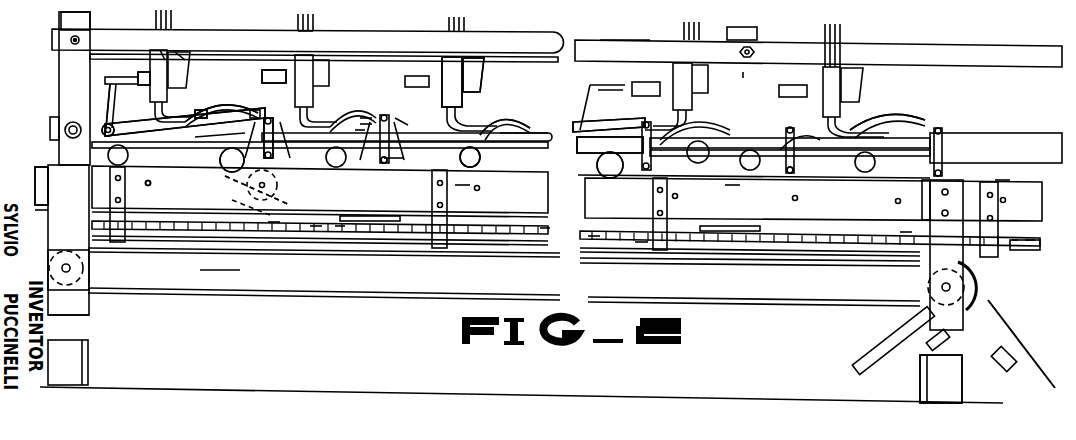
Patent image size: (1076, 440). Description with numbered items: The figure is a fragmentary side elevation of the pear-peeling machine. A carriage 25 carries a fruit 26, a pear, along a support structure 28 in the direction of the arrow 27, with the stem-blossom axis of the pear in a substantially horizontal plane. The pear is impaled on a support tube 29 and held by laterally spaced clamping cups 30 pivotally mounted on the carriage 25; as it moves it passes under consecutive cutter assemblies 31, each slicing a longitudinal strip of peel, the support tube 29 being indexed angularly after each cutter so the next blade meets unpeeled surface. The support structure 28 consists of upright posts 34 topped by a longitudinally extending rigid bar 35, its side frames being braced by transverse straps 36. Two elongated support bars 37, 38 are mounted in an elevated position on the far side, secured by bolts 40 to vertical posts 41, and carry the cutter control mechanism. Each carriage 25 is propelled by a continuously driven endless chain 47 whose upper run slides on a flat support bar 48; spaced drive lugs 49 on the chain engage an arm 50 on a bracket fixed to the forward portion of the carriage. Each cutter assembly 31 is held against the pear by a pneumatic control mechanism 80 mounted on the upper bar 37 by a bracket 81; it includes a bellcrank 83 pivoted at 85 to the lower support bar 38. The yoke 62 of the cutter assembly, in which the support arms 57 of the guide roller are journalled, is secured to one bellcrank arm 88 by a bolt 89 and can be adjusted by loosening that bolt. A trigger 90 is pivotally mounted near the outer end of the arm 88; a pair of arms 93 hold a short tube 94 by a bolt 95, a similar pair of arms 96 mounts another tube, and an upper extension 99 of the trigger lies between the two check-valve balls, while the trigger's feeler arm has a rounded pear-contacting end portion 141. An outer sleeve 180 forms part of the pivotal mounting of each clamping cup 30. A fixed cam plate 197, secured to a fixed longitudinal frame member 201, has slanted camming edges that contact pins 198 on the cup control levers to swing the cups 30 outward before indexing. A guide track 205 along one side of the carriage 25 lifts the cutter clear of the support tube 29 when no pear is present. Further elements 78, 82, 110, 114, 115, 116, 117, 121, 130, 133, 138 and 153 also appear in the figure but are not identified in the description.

The carriage 25 is at (500, 234).
The fruit 26 is at (212, 176).
The arrow 27 is at (215, 270).
The support structure 28 is at (100, 310).
The support tube 29 is at (470, 168).
The clamping cups 30 is at (222, 150).
The cutter assembly 31 is at (255, 108).
The upright posts 34 is at (240, 270).
The rigid bar 35 is at (600, 190).
The transverse straps 36 is at (432, 195).
The upper support bar 37 is at (615, 45).
The lower support bar 38 is at (548, 133).
The bolts 40 is at (73, 46).
The vertical posts 41 is at (68, 22).
The endless chain 47 is at (318, 232).
The flat support bar 48 is at (641, 244).
The drive lugs 49 is at (1016, 248).
The arm 50 is at (1028, 248).
The support arms 57 is at (656, 172).
The yoke 62 is at (390, 157).
The dashed lever 78 is at (242, 196).
The pneumatic control mechanism 80 is at (486, 70).
The bracket 81 is at (466, 52).
The bracket 82 is at (30, 185).
The bellcrank 83 is at (100, 120).
The pivot 85 is at (108, 138).
The bellcrank arm 88 is at (505, 125).
The bolt 89 is at (266, 115).
The trigger 90 is at (252, 134).
The pair of arms 93 is at (372, 116).
The short tube 94 is at (374, 122).
The bolt 95 is at (365, 128).
The pair of arms 96 is at (406, 121).
The upper extension 99 is at (628, 118).
The fitting 110 is at (182, 110).
The bracket 114 is at (183, 58).
The cylinder rod 115 is at (165, 58).
The hose 116 is at (920, 118).
The pin 117 is at (424, 160).
The small cylinder 121 is at (148, 66).
The small cylinder 130 is at (288, 80).
The link 133 is at (112, 112).
The tubes 138 is at (312, 16).
The pear-contacting end portion 141 is at (772, 172).
The bar 153 is at (1006, 181).
The outer sleeve 180 is at (266, 180).
The cam plate 197 is at (340, 234).
The pins 198 is at (276, 226).
The fixed longitudinal frame member 201 is at (36, 212).
The guide track 205 is at (462, 186).